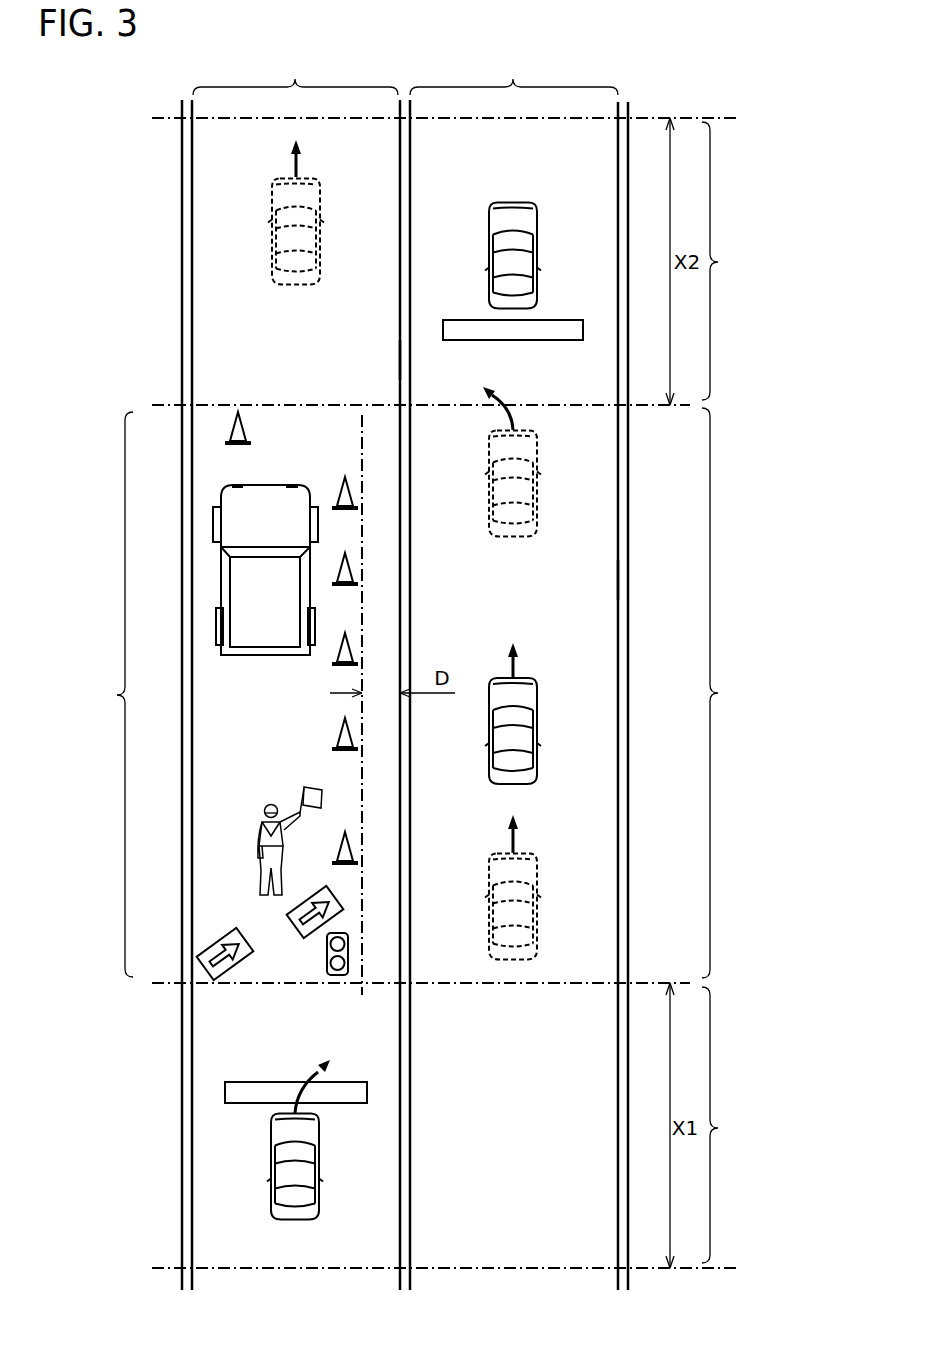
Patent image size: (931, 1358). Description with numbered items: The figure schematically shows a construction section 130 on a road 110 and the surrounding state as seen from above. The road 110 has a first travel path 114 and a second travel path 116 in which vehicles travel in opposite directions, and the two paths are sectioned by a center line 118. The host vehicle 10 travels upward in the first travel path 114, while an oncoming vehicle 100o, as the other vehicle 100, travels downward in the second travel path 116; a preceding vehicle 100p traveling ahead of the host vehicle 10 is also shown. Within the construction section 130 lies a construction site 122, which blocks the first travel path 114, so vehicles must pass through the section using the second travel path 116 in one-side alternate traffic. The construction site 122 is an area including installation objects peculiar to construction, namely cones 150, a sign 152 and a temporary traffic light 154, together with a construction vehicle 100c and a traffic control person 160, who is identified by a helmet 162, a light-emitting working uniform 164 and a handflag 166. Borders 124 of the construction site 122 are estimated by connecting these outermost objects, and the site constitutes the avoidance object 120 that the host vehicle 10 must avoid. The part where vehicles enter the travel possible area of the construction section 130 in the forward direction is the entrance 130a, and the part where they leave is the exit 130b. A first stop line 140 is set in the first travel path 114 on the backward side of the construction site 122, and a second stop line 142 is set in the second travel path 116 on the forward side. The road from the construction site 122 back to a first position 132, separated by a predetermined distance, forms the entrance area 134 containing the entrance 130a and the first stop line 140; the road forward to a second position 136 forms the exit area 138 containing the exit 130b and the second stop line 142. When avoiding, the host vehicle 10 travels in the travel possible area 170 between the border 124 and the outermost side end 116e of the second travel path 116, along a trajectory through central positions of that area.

The host vehicle 10 is at (307, 180).
The other vehicle 100 is at (408, 462).
The oncoming vehicle 100o is at (515, 202).
The preceding vehicle 100p is at (527, 678).
The construction vehicle 100c is at (265, 655).
The road 110 is at (273, 50).
The first travel path 114 is at (295, 72).
The second travel path 116 is at (514, 72).
The outermost side end of second travel path 116e is at (617, 577).
The center line 118 is at (402, 100).
The avoidance object 120 is at (93, 694).
The construction site 122 is at (97, 694).
The border 124 is at (225, 400).
The construction section 130 is at (730, 693).
The entrance 130a is at (518, 997).
The exit 130b is at (533, 400).
The first position 132 is at (728, 1268).
The entrance area 134 is at (731, 1125).
The second position 136 is at (727, 118).
The exit area 138 is at (730, 261).
The first stop line 140 is at (280, 1082).
The second stop line 142 is at (465, 320).
The cones 150 is at (345, 480).
The sign 152 is at (220, 938).
The temporary traffic light 154 is at (327, 957).
The traffic control person 160 is at (228, 815).
The helmet 162 is at (270, 805).
The working uniform 164 is at (265, 830).
The handflag 166 is at (301, 774).
The travel possible area 170 is at (393, 360).